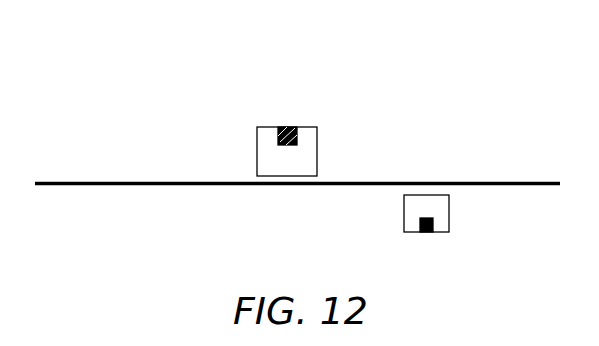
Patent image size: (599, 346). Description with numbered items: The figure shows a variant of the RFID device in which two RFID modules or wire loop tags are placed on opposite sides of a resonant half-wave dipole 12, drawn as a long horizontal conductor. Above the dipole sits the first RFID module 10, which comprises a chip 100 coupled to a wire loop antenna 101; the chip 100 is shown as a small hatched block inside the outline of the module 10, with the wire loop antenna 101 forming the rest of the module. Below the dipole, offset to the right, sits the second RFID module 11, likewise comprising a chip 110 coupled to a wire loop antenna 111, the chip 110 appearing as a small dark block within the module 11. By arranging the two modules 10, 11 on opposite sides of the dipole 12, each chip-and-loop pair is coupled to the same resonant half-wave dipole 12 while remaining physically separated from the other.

The RFID module 10 is at (263, 127).
The chip 100 is at (300, 136).
The wire loop antenna 101 is at (257, 153).
The RFID module 11 is at (404, 231).
The chip 110 is at (447, 232).
The wire loop antenna 111 is at (449, 200).
The resonant half-wave dipole 12 is at (137, 186).